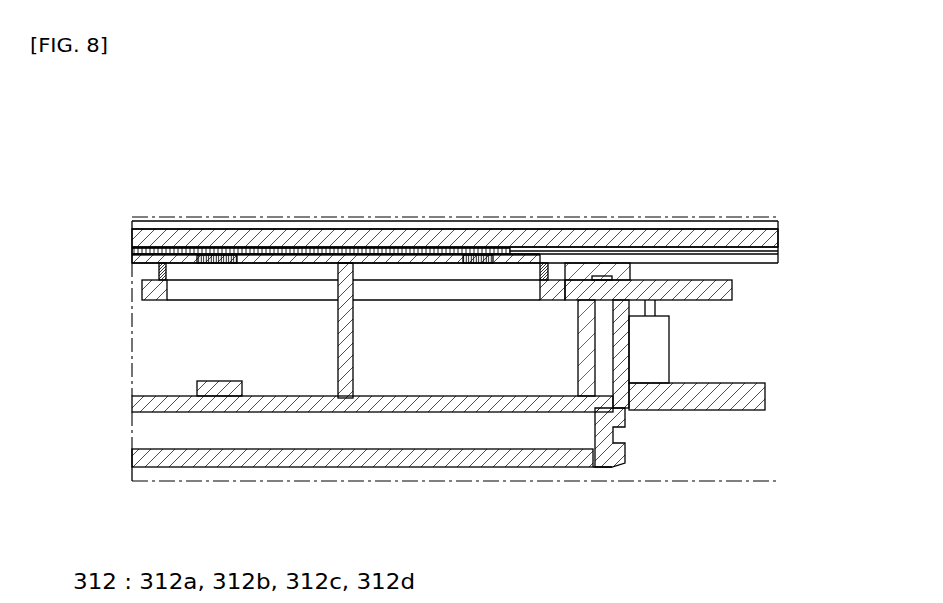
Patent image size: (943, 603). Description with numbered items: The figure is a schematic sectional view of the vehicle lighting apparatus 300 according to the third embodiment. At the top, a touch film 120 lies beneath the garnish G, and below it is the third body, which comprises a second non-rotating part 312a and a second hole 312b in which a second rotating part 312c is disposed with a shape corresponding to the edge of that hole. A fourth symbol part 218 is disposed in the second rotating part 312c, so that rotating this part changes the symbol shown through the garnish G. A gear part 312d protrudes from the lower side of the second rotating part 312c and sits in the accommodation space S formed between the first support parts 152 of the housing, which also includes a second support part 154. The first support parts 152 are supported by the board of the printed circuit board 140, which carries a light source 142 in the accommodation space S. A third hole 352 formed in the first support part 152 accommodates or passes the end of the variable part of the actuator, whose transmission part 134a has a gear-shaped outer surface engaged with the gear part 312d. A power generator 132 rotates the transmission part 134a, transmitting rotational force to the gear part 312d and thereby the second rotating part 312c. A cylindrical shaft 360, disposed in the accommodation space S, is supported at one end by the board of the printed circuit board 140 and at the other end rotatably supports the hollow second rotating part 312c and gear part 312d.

The vehicle lighting apparatus 300 is at (135, 113).
The touch film 120 is at (418, 243).
The second non-rotating part 312a is at (767, 255).
The second hole 312b is at (164, 262).
The second rotating part 312c is at (346, 262).
The gear part 312d is at (552, 263).
The fourth symbol part 218 is at (219, 255).
The garnish G is at (277, 238).
The third hole 352 is at (622, 268).
The transmission part 134a is at (703, 282).
The power generator 132 is at (669, 333).
The first support part 152 is at (625, 363).
The second support part 154 is at (717, 398).
The light source 142 is at (217, 390).
The printed circuit board 140 is at (293, 403).
The shaft 360 is at (348, 382).
The accommodation space S is at (160, 378).